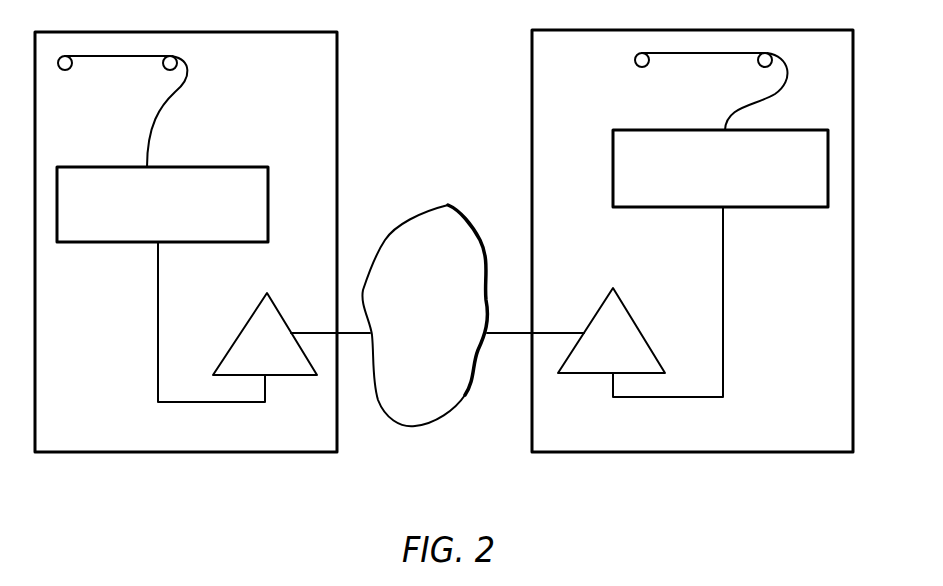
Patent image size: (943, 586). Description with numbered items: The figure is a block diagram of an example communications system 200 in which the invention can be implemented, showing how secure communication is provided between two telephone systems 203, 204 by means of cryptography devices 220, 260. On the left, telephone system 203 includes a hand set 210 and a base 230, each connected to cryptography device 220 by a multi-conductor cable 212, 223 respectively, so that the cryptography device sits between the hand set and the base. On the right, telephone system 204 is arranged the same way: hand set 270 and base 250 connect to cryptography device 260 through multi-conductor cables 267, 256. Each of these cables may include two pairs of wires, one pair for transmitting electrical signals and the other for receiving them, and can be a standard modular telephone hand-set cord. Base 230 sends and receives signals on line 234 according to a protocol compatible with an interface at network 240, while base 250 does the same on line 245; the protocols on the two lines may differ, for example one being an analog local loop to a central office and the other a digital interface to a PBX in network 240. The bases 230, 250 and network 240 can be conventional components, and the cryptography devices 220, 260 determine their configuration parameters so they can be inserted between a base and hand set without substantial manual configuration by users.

The communications system 200 is at (684, 459).
The telephone system 203 is at (338, 43).
The telephone system 204 is at (532, 52).
The hand set 210 is at (163, 50).
The multi-conductor cable 212 is at (165, 100).
The cryptography device 220 is at (237, 166).
The multi-conductor cable 223 is at (158, 287).
The base 230 is at (251, 315).
The line 234 is at (313, 331).
The network 240 is at (449, 205).
The line 245 is at (512, 336).
The base 250 is at (636, 312).
The multi-conductor cable 256 is at (723, 283).
The cryptography device 260 is at (640, 130).
The multi-conductor cable 267 is at (771, 96).
The hand set 270 is at (758, 48).